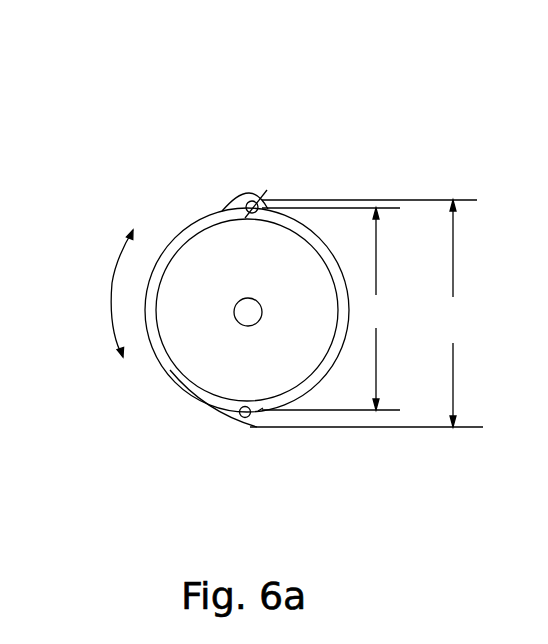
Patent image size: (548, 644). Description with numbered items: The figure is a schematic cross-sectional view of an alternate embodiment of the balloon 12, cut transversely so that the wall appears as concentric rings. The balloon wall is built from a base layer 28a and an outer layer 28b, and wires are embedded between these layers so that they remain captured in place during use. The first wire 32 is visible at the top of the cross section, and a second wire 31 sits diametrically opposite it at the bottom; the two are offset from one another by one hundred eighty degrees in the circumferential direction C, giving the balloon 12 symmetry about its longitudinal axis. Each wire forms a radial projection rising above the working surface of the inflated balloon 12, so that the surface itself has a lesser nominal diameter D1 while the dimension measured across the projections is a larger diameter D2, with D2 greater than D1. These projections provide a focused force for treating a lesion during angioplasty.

The balloon 12 is at (166, 199).
The base layer 28a is at (173, 380).
The outer layer 28b is at (220, 407).
The first wire 32 is at (250, 201).
The lower fastener hole 31 is at (262, 422).
The circumferential direction C is at (112, 284).
The diameter D1 is at (331, 309).
The diameter D2 is at (366, 313).